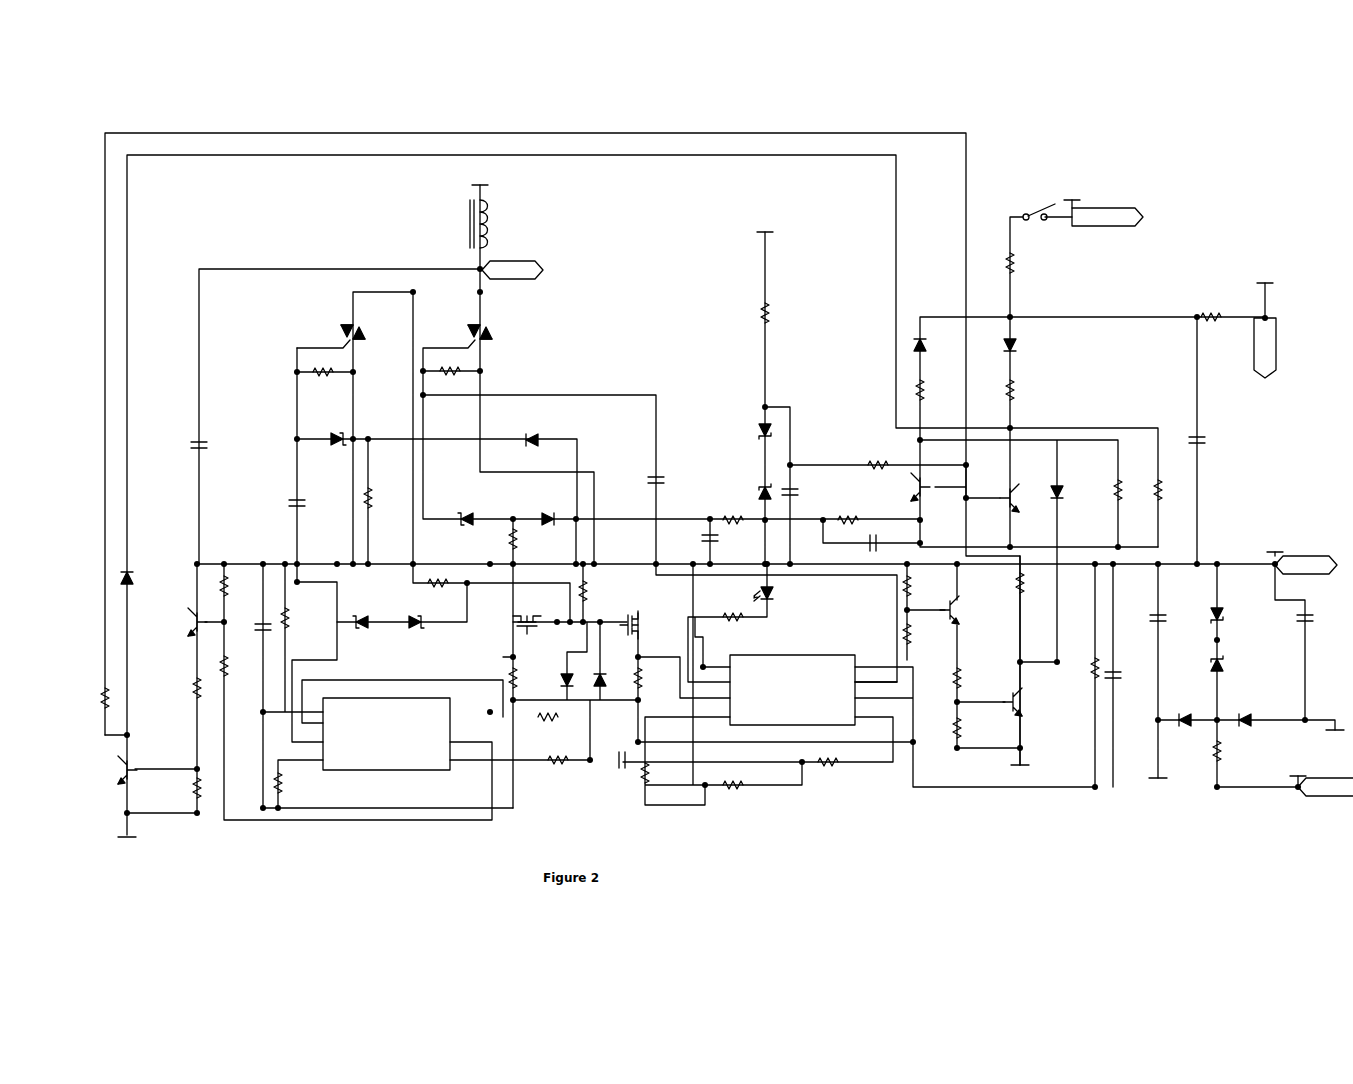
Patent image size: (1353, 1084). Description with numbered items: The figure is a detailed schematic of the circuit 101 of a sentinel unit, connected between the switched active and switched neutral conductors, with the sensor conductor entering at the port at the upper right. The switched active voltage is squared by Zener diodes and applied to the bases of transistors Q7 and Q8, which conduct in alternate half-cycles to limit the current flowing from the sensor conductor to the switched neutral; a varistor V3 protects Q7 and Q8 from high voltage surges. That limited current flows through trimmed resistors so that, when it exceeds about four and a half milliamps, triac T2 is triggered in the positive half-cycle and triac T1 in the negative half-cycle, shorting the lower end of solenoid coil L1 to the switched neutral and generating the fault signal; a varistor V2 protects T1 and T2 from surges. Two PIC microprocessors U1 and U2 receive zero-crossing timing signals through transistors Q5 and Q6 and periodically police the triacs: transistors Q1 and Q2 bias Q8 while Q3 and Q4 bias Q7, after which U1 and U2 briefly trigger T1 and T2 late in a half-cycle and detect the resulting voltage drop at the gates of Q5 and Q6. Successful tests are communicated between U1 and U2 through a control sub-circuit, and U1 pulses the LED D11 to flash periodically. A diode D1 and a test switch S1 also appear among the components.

The circuit 101 is at (1192, 130).
The solenoid coil L1 is at (465, 224).
The triac T1 is at (501, 323).
The triac T2 is at (373, 320).
The microprocessor U1 is at (795, 691).
The microprocessor U2 is at (389, 737).
The transistor Q1 is at (93, 765).
The transistor Q2 is at (167, 617).
The transistor Q3 is at (1045, 703).
The transistor Q4 is at (982, 614).
The transistor Q5 is at (636, 622).
The transistor Q6 is at (547, 623).
The transistor Q7 is at (924, 493).
The transistor Q8 is at (1010, 503).
The test switch S1 is at (1033, 218).
The varistor V2 is at (229, 452).
The varistor V3 is at (1225, 448).
The diode D1 is at (1082, 496).
The LED D11 is at (788, 598).